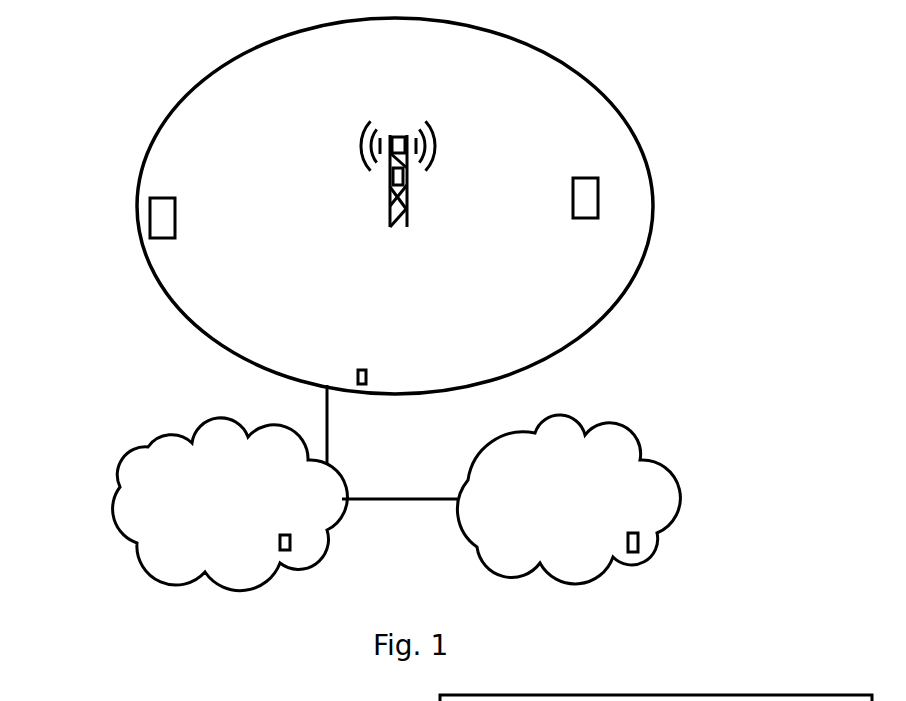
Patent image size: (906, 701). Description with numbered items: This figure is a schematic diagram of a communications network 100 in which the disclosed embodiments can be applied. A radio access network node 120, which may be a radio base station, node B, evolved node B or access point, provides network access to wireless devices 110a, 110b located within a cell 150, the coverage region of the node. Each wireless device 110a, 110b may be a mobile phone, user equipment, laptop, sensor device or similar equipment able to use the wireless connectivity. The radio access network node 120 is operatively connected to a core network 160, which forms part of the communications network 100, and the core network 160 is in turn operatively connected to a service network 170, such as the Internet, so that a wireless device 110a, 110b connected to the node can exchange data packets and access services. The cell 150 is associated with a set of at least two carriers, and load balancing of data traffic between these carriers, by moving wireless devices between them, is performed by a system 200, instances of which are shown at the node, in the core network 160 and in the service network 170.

The communications network 100 is at (698, 135).
The wireless device 110a is at (175, 208).
The wireless device 110b is at (588, 218).
The radio access network node 120 is at (407, 210).
The cell 150 is at (185, 318).
The core network 160 is at (230, 504).
The service network 170 is at (568, 499).
The system 200 is at (388, 179).